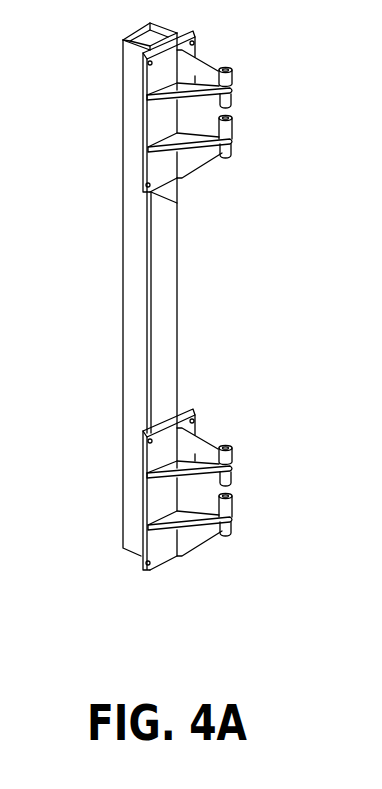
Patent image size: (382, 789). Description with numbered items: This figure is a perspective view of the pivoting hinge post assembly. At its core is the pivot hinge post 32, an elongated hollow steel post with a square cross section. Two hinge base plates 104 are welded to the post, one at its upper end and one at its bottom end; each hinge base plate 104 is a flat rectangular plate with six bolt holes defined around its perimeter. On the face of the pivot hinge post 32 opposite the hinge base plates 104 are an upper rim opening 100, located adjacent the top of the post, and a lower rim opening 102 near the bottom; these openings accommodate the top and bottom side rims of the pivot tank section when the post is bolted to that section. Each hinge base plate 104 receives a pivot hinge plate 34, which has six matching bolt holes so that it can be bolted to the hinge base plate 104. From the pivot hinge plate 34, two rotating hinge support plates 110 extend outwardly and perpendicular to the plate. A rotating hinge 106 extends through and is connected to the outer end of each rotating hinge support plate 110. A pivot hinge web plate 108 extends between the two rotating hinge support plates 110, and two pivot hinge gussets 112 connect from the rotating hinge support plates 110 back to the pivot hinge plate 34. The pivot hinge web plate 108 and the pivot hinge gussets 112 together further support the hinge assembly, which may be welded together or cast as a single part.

The pivot hinge post 32 is at (123, 308).
The pivot hinge plate 34 is at (167, 199).
The upper rim opening 100 is at (118, 48).
The lower rim opening 102 is at (128, 483).
The hinge base plate 104 is at (142, 167).
The rotating hinge 106 is at (226, 66).
The pivot hinge web plate 108 is at (234, 114).
The rotating hinge support plate 110 is at (226, 98).
The pivot hinge gusset 112 is at (214, 159).